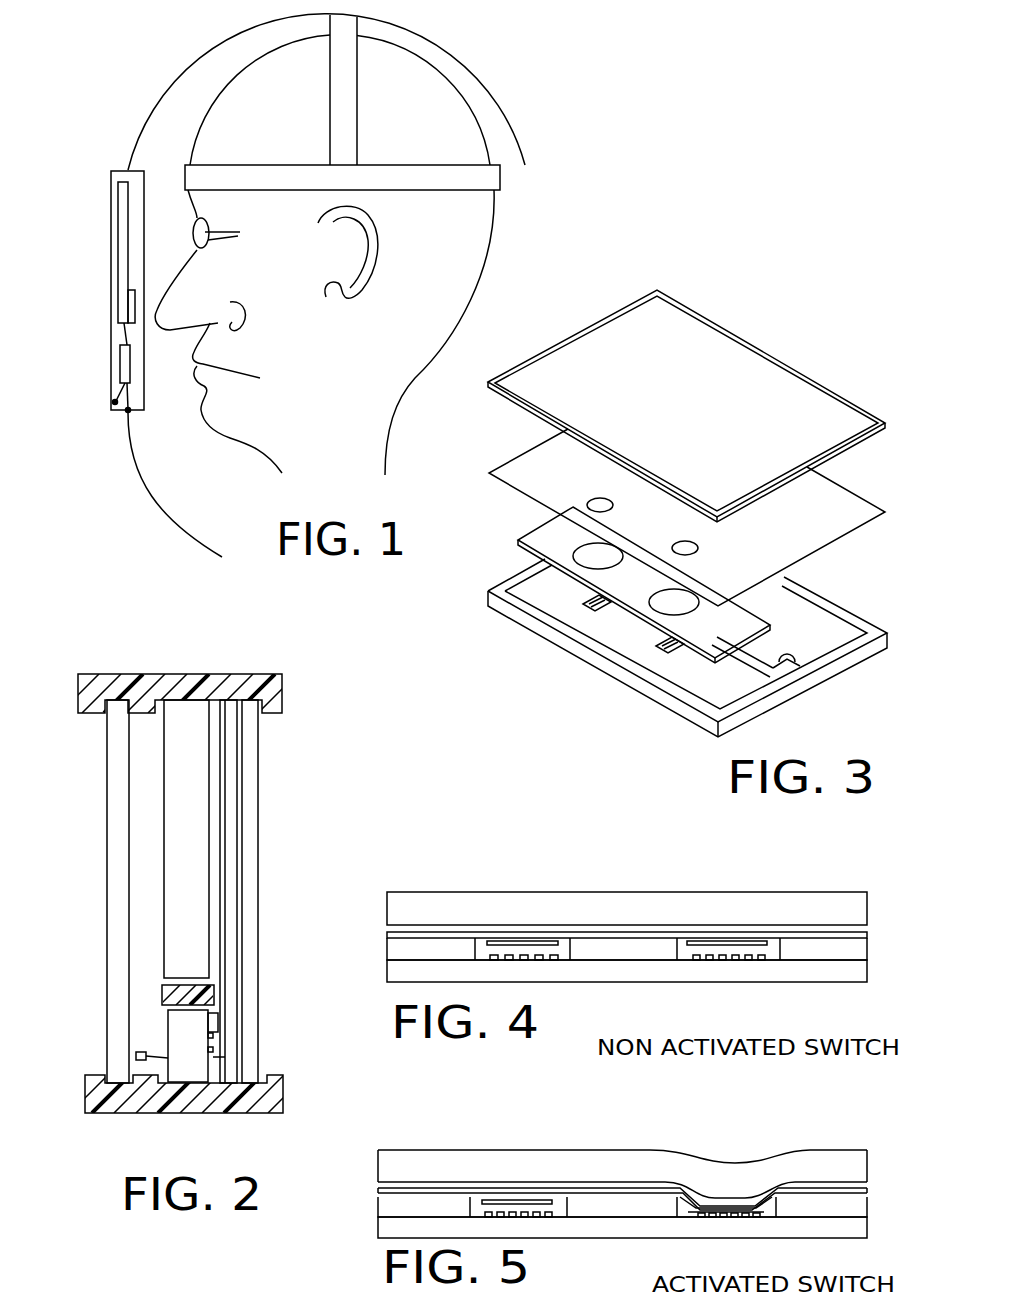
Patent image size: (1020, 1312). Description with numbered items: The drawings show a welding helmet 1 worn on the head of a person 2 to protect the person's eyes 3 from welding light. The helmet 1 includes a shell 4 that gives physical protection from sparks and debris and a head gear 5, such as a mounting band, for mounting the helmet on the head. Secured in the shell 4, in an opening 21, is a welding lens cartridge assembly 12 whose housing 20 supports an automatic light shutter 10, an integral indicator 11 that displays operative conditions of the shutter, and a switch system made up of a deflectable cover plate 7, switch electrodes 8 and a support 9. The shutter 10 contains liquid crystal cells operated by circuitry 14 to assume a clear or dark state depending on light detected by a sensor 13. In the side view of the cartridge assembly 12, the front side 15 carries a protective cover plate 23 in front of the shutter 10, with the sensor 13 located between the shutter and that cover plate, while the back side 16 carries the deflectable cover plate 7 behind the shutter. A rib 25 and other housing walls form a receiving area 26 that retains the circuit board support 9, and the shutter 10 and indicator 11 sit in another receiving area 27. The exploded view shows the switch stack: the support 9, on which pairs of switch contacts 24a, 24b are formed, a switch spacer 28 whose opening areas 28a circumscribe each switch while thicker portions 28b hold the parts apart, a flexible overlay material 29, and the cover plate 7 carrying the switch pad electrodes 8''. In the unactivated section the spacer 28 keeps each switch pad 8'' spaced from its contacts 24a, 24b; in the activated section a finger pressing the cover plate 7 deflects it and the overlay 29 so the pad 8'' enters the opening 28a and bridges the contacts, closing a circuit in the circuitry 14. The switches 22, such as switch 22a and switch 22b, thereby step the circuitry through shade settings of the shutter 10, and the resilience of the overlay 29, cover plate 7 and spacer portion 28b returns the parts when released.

In FIG. 1, the welding helmet 1 is at (125, 83).
In FIG. 1, the person 2 is at (470, 216).
In FIG. 1, the eyes 3 is at (212, 233).
In FIG. 1, the shell 4 is at (197, 55).
In FIG. 1, the head gear 5 is at (250, 175).
In FIG. 3, the deflectable cover plate 7 is at (835, 418).
In FIG. 2, the deflectable cover plate 7 is at (258, 865).
In FIG. 4, the deflectable cover plate 7 is at (850, 895).
In FIG. 5, the deflectable cover plate 7 is at (867, 1152).
In FIG. 3, the switch electrodes 8 is at (611, 701).
In FIG. 4, the switch electrodes 8 is at (802, 856).
In FIG. 5, the switch electrodes 8 is at (780, 1112).
In FIG. 3, the switch pad electrode 8'' is at (681, 526).
In FIG. 2, the switch pad electrode 8'' is at (290, 1036).
In FIG. 4, the switch pad electrode 8'' is at (761, 916).
In FIG. 5, the switch pad electrode 8'' is at (806, 1154).
In FIG. 3, the support 9 is at (810, 652).
In FIG. 2, the support 9 is at (198, 1018).
In FIG. 4, the support 9 is at (872, 984).
In FIG. 5, the support 9 is at (868, 1235).
In FIG. 1, the automatic light shutter 10 is at (100, 207).
In FIG. 2, the automatic light shutter 10 is at (164, 800).
In FIG. 1, the integral indicator 11 is at (108, 318).
In FIG. 2, the integral indicator 11 is at (208, 962).
In FIG. 1, the welding lens cartridge assembly 12 is at (111, 180).
In FIG. 2, the welding lens cartridge assembly 12 is at (95, 752).
In FIG. 1, the sensor 13 is at (113, 402).
In FIG. 2, the sensor 13 is at (136, 1056).
In FIG. 1, the circuitry 14 is at (122, 360).
In FIG. 2, the circuitry 14 is at (278, 1006).
In FIG. 1, the front side 15 is at (71, 243).
In FIG. 2, the front side 15 is at (75, 812).
In FIG. 1, the back side 16 is at (152, 200).
In FIG. 2, the back side 16 is at (312, 773).
In FIG. 1, the housing 20 is at (120, 412).
In FIG. 3, the housing 20 is at (735, 720).
In FIG. 2, the housing 20 is at (80, 690).
In FIG. 1, the opening 21 is at (128, 413).
In FIG. 2, the switches 22 is at (250, 1042).
In FIG. 3, the switch 22a is at (640, 648).
In FIG. 4, the switch 22a is at (685, 886).
In FIG. 5, the switch 22a is at (727, 1140).
In FIG. 3, the second switch contact region 22b is at (560, 598).
In FIG. 4, the second switch contact region 22b is at (495, 888).
In FIG. 5, the second switch contact region 22b is at (520, 1143).
In FIG. 2, the protective cover plate 23 is at (107, 868).
In FIG. 3, the switch contact 24a is at (672, 665).
In FIG. 2, the switch contact 24a is at (208, 1035).
In FIG. 4, the switch contact 24a is at (763, 961).
In FIG. 5, the switch contact 24a is at (743, 1218).
In FIG. 3, the switch contact 24b is at (690, 652).
In FIG. 2, the switch contact 24b is at (208, 1050).
In FIG. 4, the switch contact 24b is at (748, 961).
In FIG. 5, the switch contact 24b is at (790, 1216).
In FIG. 3, the rib 25 is at (790, 676).
In FIG. 2, the rib 25 is at (163, 990).
In FIG. 3, the receiving area 26 is at (800, 685).
In FIG. 3, the receiving area 27 is at (790, 645).
In FIG. 3, the switch spacer 28 is at (757, 613).
In FIG. 2, the switch spacer 28 is at (213, 1070).
In FIG. 4, the switch spacer 28 is at (870, 953).
In FIG. 5, the switch spacer 28 is at (868, 1206).
In FIG. 3, the opening areas 28a is at (542, 560).
In FIG. 2, the opening areas 28a is at (220, 1057).
In FIG. 4, the opening areas 28a is at (685, 958).
In FIG. 5, the opening areas 28a is at (685, 1210).
In FIG. 3, the spacer portions 28b is at (548, 536).
In FIG. 4, the spacer portions 28b is at (607, 952).
In FIG. 5, the spacer portions 28b is at (610, 1210).
In FIG. 3, the flexible overlay material 29 is at (868, 503).
In FIG. 2, the flexible overlay material 29 is at (237, 1070).
In FIG. 4, the flexible overlay material 29 is at (870, 932).
In FIG. 5, the flexible overlay material 29 is at (868, 1190).